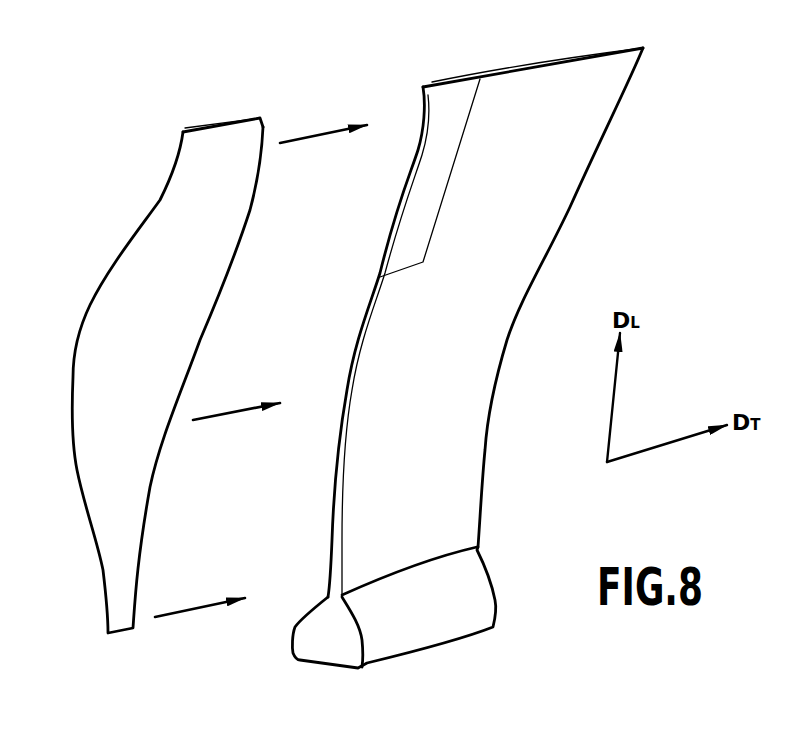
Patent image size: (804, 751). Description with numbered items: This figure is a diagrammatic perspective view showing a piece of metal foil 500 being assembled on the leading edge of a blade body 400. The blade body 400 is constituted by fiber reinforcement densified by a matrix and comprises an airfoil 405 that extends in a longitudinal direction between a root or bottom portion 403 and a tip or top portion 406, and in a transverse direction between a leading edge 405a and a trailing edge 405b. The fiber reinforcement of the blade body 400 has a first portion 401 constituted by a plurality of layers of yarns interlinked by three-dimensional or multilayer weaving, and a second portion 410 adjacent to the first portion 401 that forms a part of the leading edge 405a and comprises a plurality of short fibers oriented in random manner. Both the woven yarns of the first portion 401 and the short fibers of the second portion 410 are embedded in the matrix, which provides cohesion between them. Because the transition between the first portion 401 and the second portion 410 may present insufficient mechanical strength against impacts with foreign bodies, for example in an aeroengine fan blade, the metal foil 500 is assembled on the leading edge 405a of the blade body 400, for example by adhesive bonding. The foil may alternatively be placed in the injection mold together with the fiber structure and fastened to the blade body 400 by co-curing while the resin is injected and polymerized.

The metal foil 500 is at (133, 210).
The blade body 400 is at (466, 340).
The first portion 401 is at (473, 340).
The root or bottom portion 403 is at (470, 587).
The airfoil 405 is at (466, 322).
The leading edge 405a is at (367, 315).
The trailing edge 405b is at (570, 207).
The tip or top portion 406 is at (520, 70).
The second portion 410 is at (443, 160).